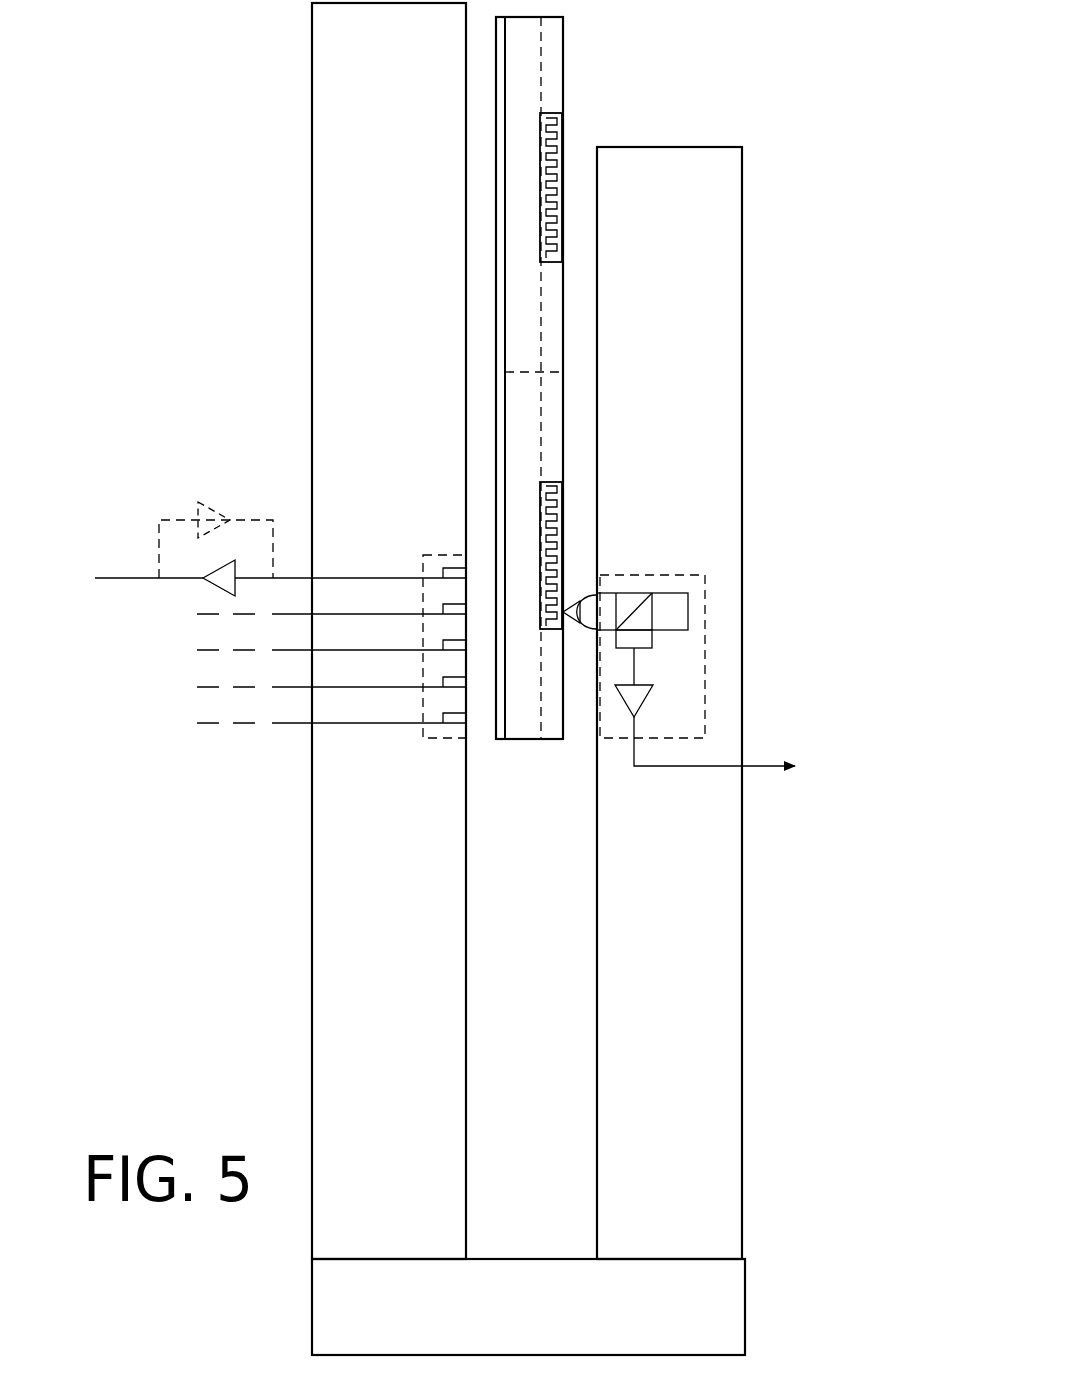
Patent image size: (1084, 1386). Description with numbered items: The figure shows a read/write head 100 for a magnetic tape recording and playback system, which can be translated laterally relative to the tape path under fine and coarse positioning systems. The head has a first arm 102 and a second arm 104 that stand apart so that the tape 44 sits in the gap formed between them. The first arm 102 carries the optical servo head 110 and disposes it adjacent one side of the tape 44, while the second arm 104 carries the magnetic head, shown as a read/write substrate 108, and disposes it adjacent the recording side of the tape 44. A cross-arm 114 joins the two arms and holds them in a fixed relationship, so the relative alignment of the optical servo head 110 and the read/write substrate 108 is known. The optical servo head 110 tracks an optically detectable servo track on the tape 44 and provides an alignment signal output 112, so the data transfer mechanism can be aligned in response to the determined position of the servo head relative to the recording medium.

The tape 44 is at (564, 51).
The read/write head 100 is at (810, 189).
The first arm 102 is at (717, 256).
The second arm 104 is at (342, 222).
The read/write substrate 108 is at (414, 561).
The optical servo head 110 is at (707, 607).
The alignment signal output 112 is at (748, 750).
The cross-arm 114 is at (746, 1309).